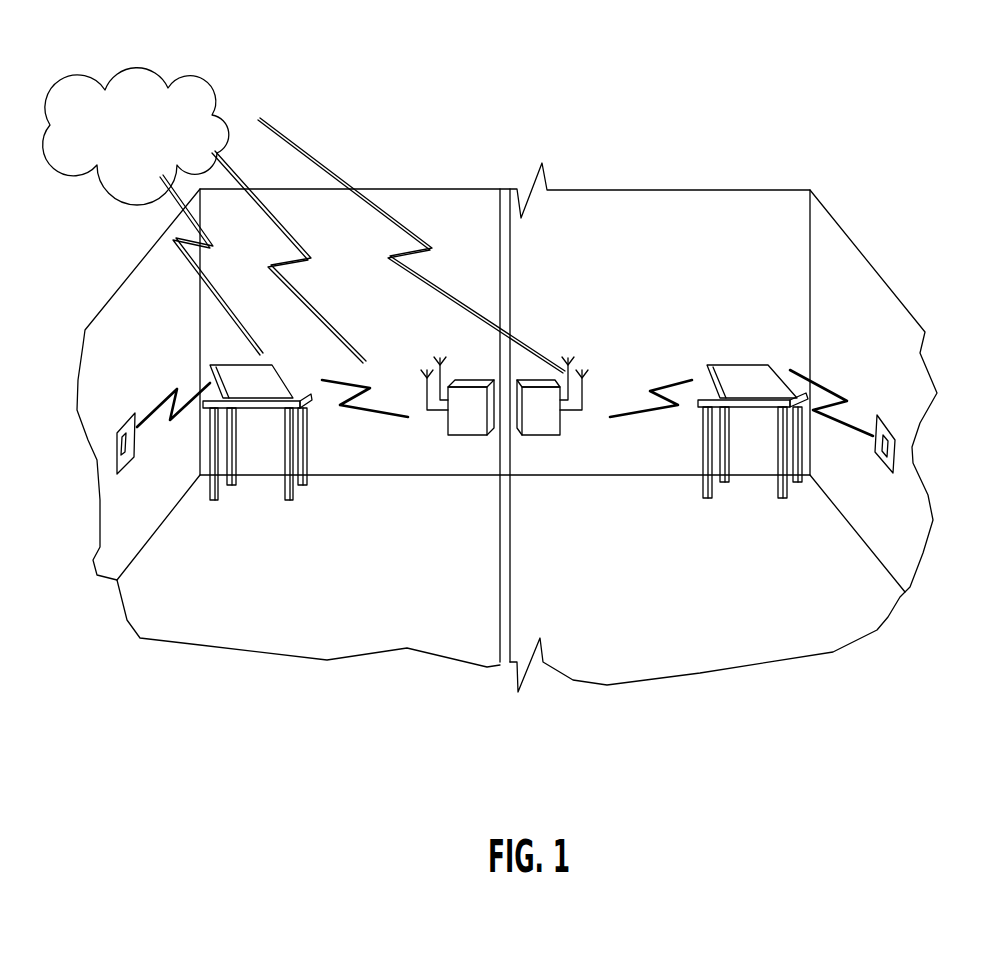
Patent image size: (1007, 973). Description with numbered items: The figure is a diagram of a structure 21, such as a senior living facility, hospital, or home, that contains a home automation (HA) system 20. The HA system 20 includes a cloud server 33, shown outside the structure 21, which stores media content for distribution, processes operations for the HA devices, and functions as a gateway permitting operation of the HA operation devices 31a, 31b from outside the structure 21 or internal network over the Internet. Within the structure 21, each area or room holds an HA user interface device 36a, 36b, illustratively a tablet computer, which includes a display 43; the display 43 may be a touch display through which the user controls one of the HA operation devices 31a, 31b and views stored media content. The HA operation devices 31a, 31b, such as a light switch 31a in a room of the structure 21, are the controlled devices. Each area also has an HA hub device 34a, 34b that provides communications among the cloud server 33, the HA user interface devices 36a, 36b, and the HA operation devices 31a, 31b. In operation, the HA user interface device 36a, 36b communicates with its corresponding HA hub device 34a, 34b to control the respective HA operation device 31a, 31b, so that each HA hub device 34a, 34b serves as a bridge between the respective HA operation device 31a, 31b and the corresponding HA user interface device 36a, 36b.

The home automation (HA) system 20 is at (362, 70).
The structure 21 is at (788, 134).
The HA operation device (light switch) 31a is at (132, 418).
The HA operation device 31b is at (893, 440).
The cloud server 33 is at (73, 90).
The HA hub device 34a is at (468, 425).
The HA hub device 34b is at (538, 425).
The HA user interface device 36a is at (247, 365).
The HA user interface device 36b is at (770, 365).
The display 43 is at (243, 381).